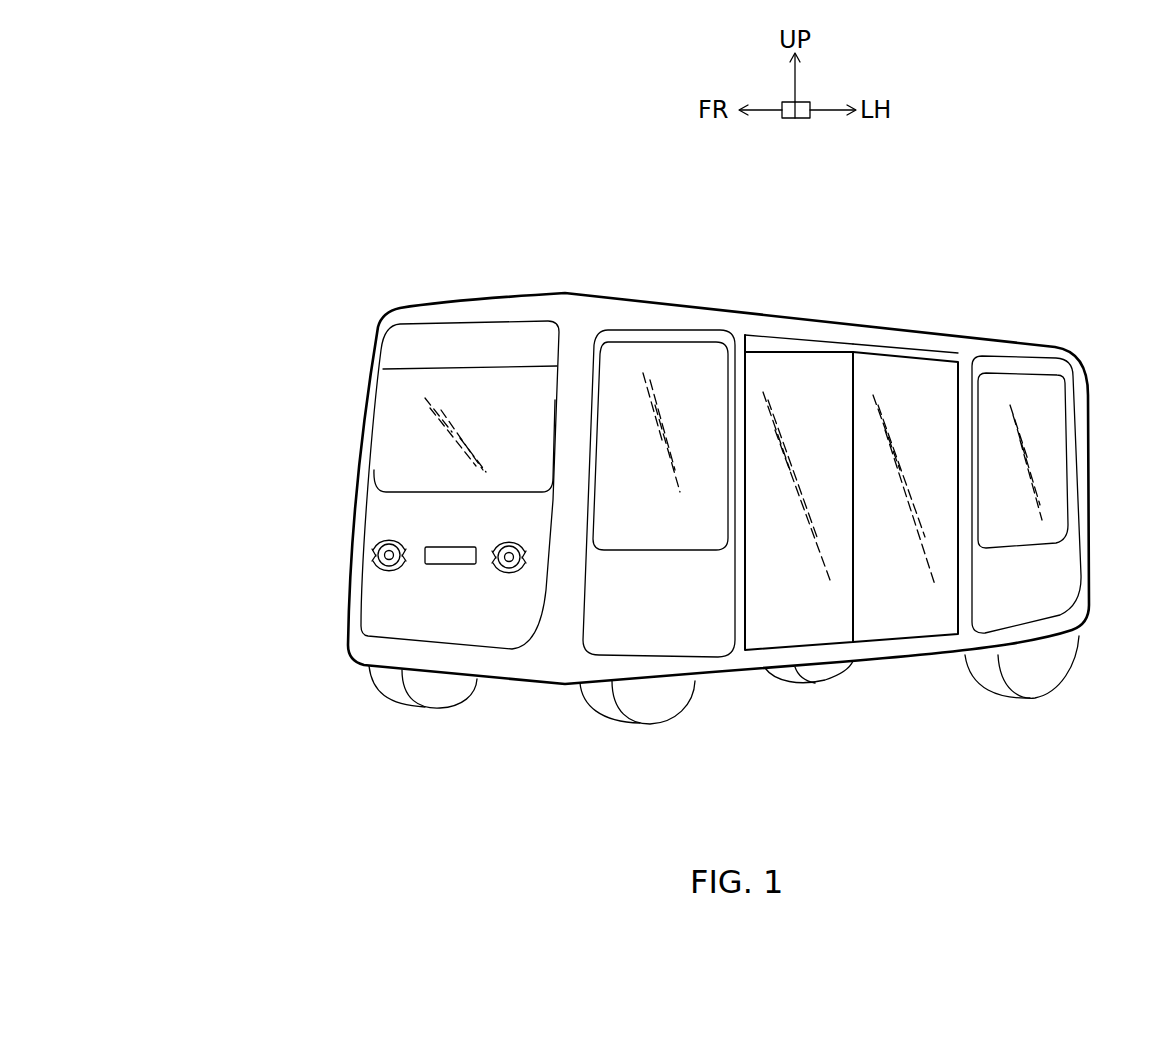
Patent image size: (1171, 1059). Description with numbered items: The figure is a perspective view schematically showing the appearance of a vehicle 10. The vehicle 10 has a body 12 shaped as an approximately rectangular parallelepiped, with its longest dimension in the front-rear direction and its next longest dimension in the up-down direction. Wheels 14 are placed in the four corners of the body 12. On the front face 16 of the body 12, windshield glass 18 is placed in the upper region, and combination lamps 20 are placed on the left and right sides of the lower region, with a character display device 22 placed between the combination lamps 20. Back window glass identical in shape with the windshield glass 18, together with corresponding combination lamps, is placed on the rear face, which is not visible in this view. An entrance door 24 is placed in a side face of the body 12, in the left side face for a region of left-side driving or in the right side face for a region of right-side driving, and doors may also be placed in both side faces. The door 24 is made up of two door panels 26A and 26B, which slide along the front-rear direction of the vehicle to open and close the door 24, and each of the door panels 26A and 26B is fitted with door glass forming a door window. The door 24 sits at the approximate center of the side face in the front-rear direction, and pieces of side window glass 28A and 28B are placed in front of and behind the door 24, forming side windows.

The vehicle 10 is at (908, 218).
The body 12 is at (917, 327).
The wheels 14 is at (398, 693).
The front face 16 is at (388, 512).
The windshield glass 18 is at (408, 400).
The combination lamps 20 is at (383, 573).
The character display device 22 is at (437, 566).
The entrance door 24 is at (862, 692).
The door panel 26A is at (783, 632).
The door panel 26B is at (898, 617).
The side window glass 28A is at (672, 362).
The side window glass 28B is at (1030, 393).